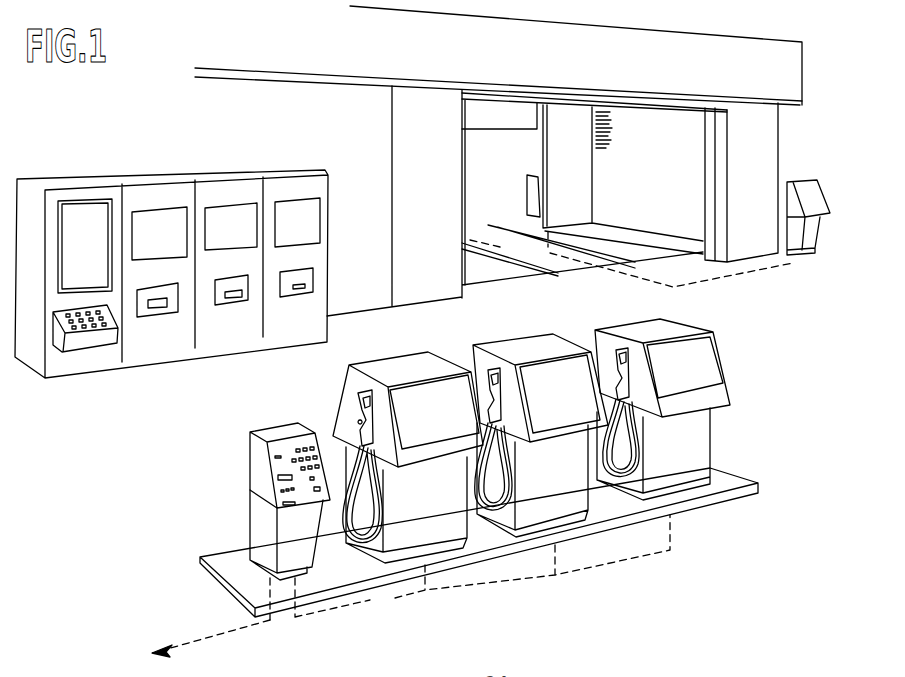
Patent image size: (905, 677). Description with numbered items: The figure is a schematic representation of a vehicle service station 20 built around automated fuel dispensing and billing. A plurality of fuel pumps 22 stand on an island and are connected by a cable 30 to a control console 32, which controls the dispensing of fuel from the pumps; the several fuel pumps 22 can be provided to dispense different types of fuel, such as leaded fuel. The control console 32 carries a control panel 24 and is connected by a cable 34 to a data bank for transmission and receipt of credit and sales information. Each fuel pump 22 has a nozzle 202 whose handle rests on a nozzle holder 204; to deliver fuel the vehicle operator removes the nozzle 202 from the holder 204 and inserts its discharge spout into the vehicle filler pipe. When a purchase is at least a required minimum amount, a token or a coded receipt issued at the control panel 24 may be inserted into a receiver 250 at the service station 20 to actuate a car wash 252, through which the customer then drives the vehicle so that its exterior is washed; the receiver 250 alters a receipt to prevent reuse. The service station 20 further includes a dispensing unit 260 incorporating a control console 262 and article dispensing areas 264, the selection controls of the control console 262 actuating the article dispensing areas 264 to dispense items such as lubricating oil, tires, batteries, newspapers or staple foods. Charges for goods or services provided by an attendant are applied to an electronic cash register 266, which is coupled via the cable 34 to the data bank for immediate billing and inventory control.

The vehicle service station 20 is at (443, 333).
The fuel pumps 22 is at (407, 367).
The control panel 24 is at (273, 443).
The cable 30 is at (388, 607).
The control console 32 is at (253, 462).
The cable 34 is at (180, 647).
The nozzle 202 is at (355, 420).
The nozzle holder 204 is at (362, 395).
The receiver 250 is at (818, 190).
The car wash 252 is at (748, 126).
The dispensing unit 260 is at (33, 200).
The control console 262 is at (90, 217).
The article dispensing areas 264 is at (145, 347).
The electronic cash register 266 is at (82, 337).